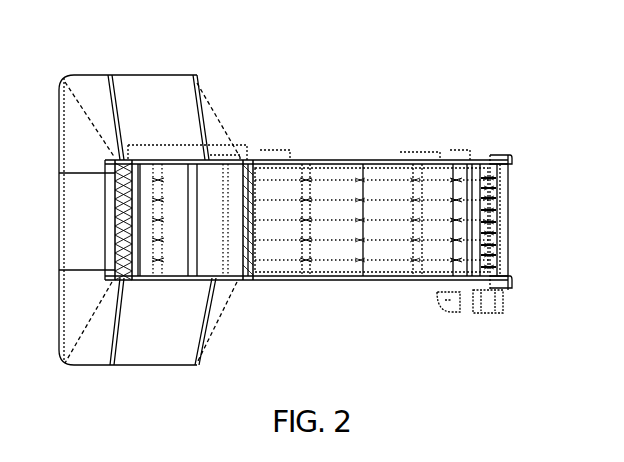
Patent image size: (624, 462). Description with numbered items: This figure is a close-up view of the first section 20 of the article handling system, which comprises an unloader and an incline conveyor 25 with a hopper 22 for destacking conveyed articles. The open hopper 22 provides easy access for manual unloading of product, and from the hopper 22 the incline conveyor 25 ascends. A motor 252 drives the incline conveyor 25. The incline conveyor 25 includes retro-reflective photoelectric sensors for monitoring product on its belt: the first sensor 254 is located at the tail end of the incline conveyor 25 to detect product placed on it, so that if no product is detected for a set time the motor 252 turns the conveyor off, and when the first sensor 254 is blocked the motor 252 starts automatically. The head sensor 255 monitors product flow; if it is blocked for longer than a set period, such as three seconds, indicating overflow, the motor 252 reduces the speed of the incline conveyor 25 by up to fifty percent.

The first section 20 is at (360, 90).
The hopper 22 is at (195, 74).
The incline conveyor 25 is at (327, 187).
The motor 252 is at (482, 313).
The first sensor 254 is at (130, 160).
The head sensor 255 is at (476, 157).